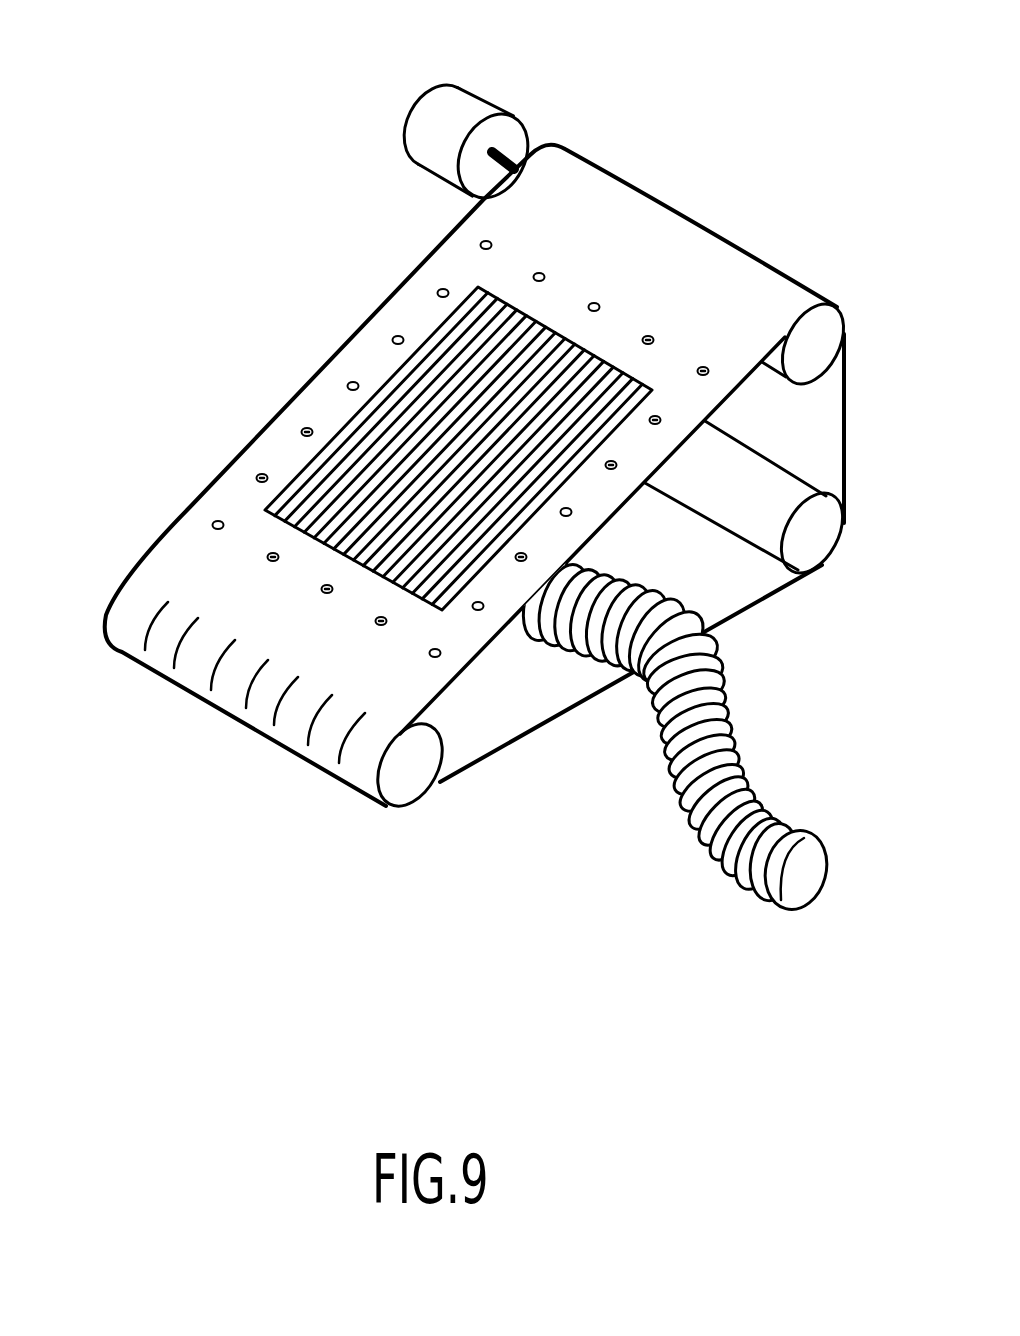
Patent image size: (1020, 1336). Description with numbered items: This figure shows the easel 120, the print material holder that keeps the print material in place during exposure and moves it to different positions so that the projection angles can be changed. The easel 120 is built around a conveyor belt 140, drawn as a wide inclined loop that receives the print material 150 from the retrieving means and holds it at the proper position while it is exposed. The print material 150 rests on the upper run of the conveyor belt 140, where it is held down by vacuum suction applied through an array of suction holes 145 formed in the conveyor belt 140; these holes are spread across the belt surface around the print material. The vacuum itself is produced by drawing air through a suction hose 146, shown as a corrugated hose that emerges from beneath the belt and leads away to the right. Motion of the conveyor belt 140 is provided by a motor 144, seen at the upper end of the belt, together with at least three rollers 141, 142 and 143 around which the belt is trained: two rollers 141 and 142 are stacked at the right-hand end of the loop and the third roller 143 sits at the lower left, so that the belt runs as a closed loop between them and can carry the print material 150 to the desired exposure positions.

The easel 120 is at (873, 417).
The conveyor belt 140 is at (157, 570).
The roller 141 is at (825, 322).
The roller 142 is at (823, 542).
The roller 143 is at (415, 773).
The motor 144 is at (467, 97).
The suction holes 145 is at (262, 478).
The suction hose 146 is at (817, 863).
The print material 150 is at (450, 388).